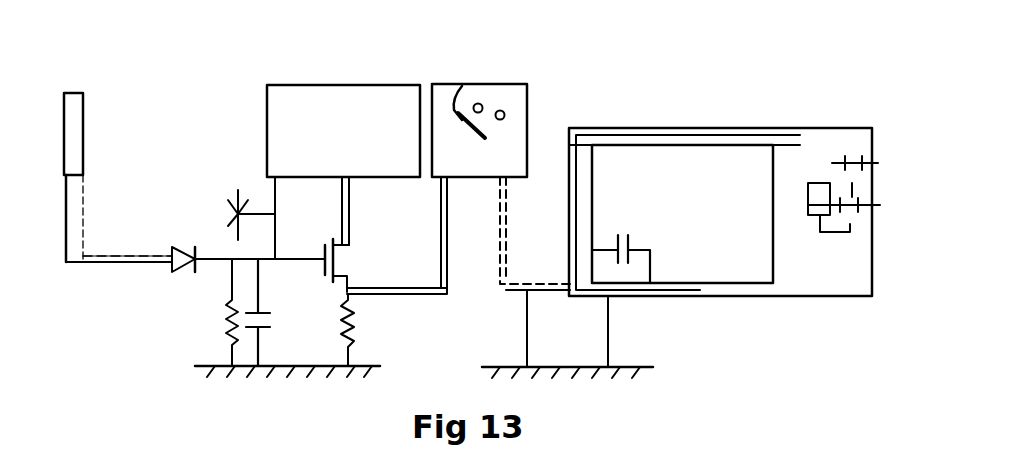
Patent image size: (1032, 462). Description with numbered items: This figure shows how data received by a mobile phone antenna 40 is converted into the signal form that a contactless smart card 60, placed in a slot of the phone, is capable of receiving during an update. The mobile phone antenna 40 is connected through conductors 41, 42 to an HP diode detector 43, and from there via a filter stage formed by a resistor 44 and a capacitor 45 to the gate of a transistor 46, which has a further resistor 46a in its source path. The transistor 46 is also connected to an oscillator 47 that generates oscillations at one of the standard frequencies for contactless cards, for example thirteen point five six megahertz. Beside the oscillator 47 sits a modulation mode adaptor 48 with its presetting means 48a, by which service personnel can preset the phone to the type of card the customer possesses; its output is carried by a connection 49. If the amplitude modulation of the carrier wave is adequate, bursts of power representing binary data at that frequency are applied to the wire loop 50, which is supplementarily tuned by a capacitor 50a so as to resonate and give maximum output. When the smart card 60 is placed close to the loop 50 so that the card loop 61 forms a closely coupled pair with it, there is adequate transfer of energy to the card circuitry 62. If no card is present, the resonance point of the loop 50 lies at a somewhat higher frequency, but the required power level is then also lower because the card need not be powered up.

The mobile phone antenna 40 is at (90, 156).
The antenna feed conductor 41 is at (127, 227).
The antenna ground conductor 42 is at (119, 293).
The HP diode detector 43 is at (183, 245).
The filter stage 44 is at (212, 320).
The filter stage 45 is at (277, 312).
The transistor 46 is at (350, 254).
The resistor 46a is at (360, 312).
The oscillator 47 is at (296, 95).
The modulation mode adaptor 48 is at (518, 98).
The presetting means 48a is at (462, 86).
The connecting cable 49 is at (510, 240).
The wire loop 50 is at (772, 178).
The capacitor 50a is at (630, 234).
The contact-free smart card 60 is at (880, 154).
The card loop 61 is at (800, 130).
The connector element 62 is at (880, 192).